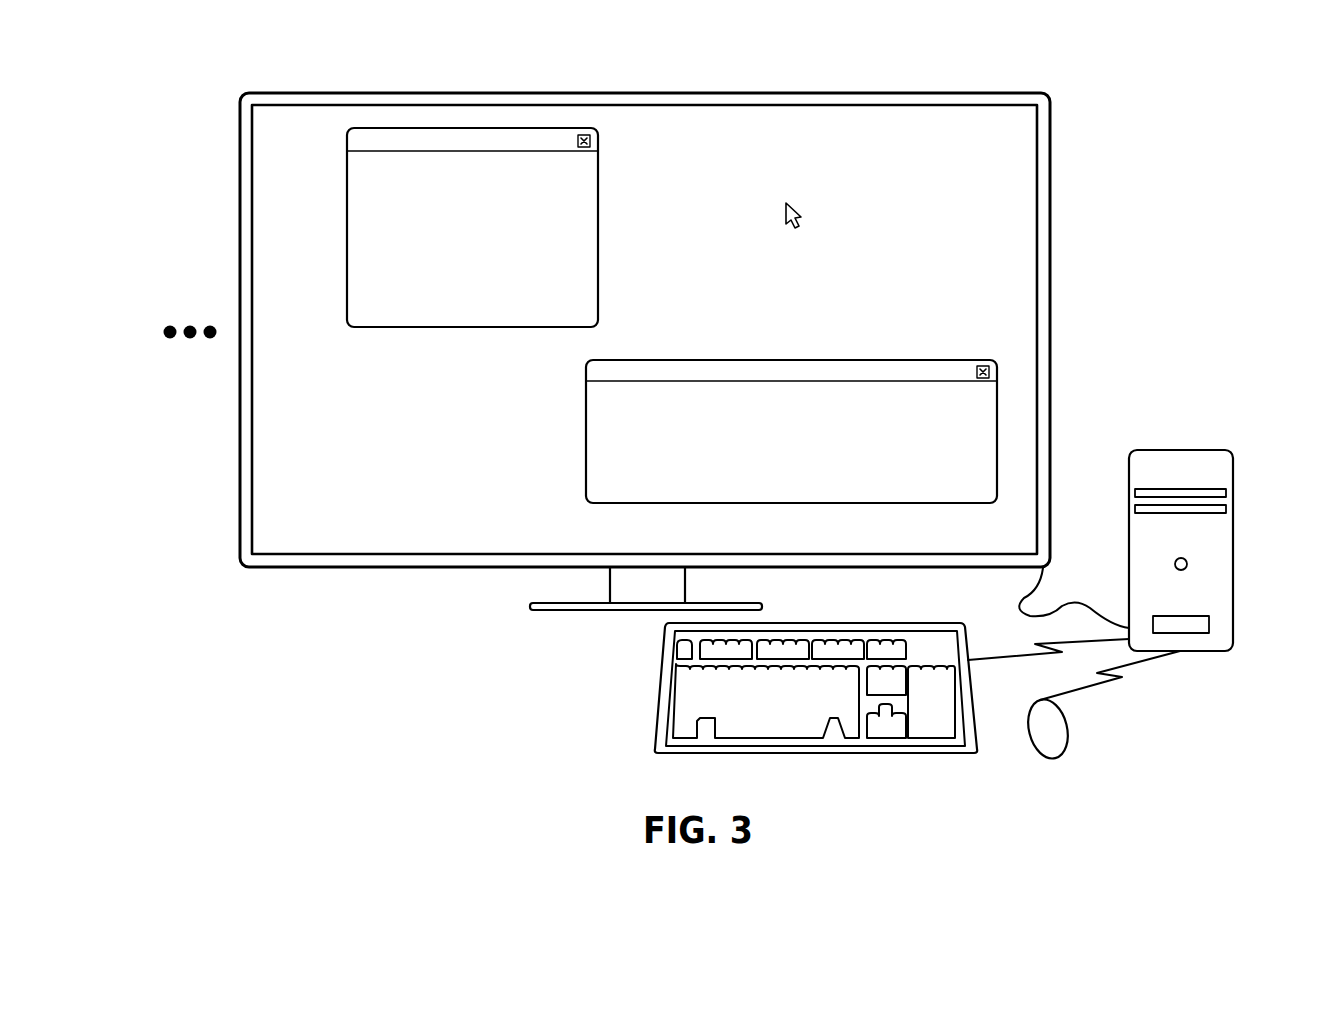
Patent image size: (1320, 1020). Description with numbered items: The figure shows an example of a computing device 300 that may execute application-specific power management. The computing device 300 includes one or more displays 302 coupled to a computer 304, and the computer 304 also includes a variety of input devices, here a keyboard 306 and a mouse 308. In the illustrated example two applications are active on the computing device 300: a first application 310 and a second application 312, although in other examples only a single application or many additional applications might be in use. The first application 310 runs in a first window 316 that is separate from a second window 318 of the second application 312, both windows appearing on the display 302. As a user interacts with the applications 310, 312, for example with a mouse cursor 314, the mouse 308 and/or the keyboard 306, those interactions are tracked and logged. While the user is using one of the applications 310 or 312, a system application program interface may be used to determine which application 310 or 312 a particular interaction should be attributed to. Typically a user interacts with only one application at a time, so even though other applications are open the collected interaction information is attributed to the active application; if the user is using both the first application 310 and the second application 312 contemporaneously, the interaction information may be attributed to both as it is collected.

The computing device 300 is at (193, 78).
The display 302 is at (1052, 105).
The computer 304 is at (1233, 548).
The keyboard 306 is at (660, 690).
The mouse 308 is at (1068, 726).
The first application 310 is at (455, 220).
The second application 312 is at (807, 456).
The mouse cursor 314 is at (786, 211).
The first window 316 is at (598, 169).
The second window 318 is at (586, 420).